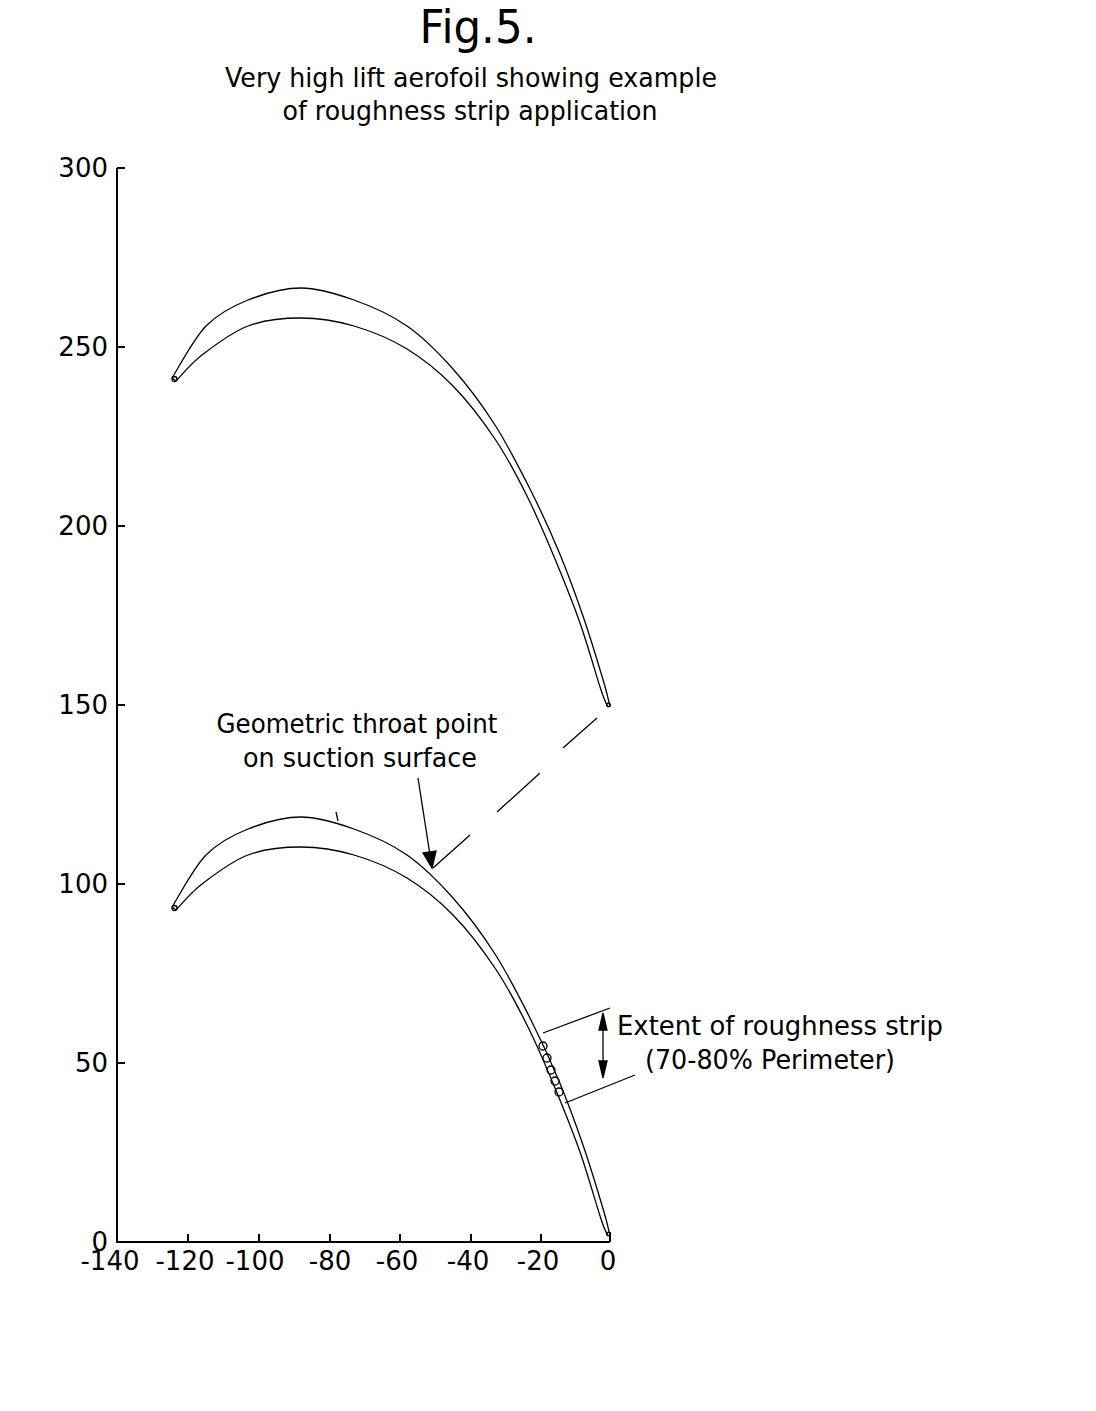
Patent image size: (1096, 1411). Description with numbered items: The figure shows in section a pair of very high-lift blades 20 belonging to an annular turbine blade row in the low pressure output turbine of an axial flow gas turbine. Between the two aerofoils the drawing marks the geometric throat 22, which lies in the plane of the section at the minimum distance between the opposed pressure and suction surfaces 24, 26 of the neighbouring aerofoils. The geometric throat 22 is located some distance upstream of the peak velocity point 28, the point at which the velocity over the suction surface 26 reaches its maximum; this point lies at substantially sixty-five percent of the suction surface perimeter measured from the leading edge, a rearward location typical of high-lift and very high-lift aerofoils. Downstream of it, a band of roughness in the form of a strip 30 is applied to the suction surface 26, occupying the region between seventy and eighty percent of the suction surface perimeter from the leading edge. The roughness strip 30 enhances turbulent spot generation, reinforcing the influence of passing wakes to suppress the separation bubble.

The very high-lift blade 20 is at (391, 734).
The geometric throat 22 is at (593, 727).
The pressure surface 24 is at (386, 343).
The suction surface 26 is at (391, 1026).
The peak velocity point 28 is at (503, 955).
The roughness strip 30 is at (560, 1078).